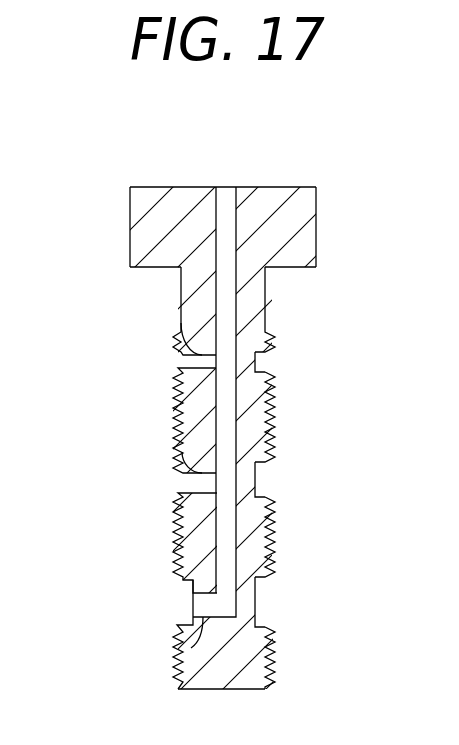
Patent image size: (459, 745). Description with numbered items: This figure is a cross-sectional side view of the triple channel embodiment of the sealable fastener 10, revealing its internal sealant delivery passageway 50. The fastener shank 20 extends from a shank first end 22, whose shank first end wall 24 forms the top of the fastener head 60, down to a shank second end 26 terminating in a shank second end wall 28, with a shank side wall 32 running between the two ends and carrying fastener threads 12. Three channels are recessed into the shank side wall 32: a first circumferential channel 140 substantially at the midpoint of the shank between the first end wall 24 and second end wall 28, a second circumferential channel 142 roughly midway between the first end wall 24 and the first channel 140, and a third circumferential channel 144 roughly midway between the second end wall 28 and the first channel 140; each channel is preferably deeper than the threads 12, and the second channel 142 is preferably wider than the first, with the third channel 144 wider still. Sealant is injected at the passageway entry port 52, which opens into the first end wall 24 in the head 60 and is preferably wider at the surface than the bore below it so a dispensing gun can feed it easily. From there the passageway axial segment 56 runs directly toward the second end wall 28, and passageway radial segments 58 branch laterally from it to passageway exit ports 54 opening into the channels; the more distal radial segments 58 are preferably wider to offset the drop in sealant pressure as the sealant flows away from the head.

The sealable fastener 10 is at (70, 376).
The fastener threads 12 is at (176, 529).
The fastener shank 20 is at (265, 291).
The shank first end 22 is at (128, 192).
The shank first end wall 24 is at (297, 186).
The shank second end 26 is at (278, 655).
The shank second end wall 28 is at (238, 690).
The shank side wall 32 is at (181, 288).
The sealant delivery passageway 50 is at (218, 314).
The passageway entry port 52 is at (226, 186).
The passageway exit port 54 is at (177, 368).
The passageway axial segment 56 is at (220, 236).
The passageway radial segment 58 is at (181, 323).
The fastener head 60 is at (135, 228).
The first circumferential channel 140 is at (256, 362).
The second circumferential channel 142 is at (257, 482).
The third circumferential channel 144 is at (258, 608).